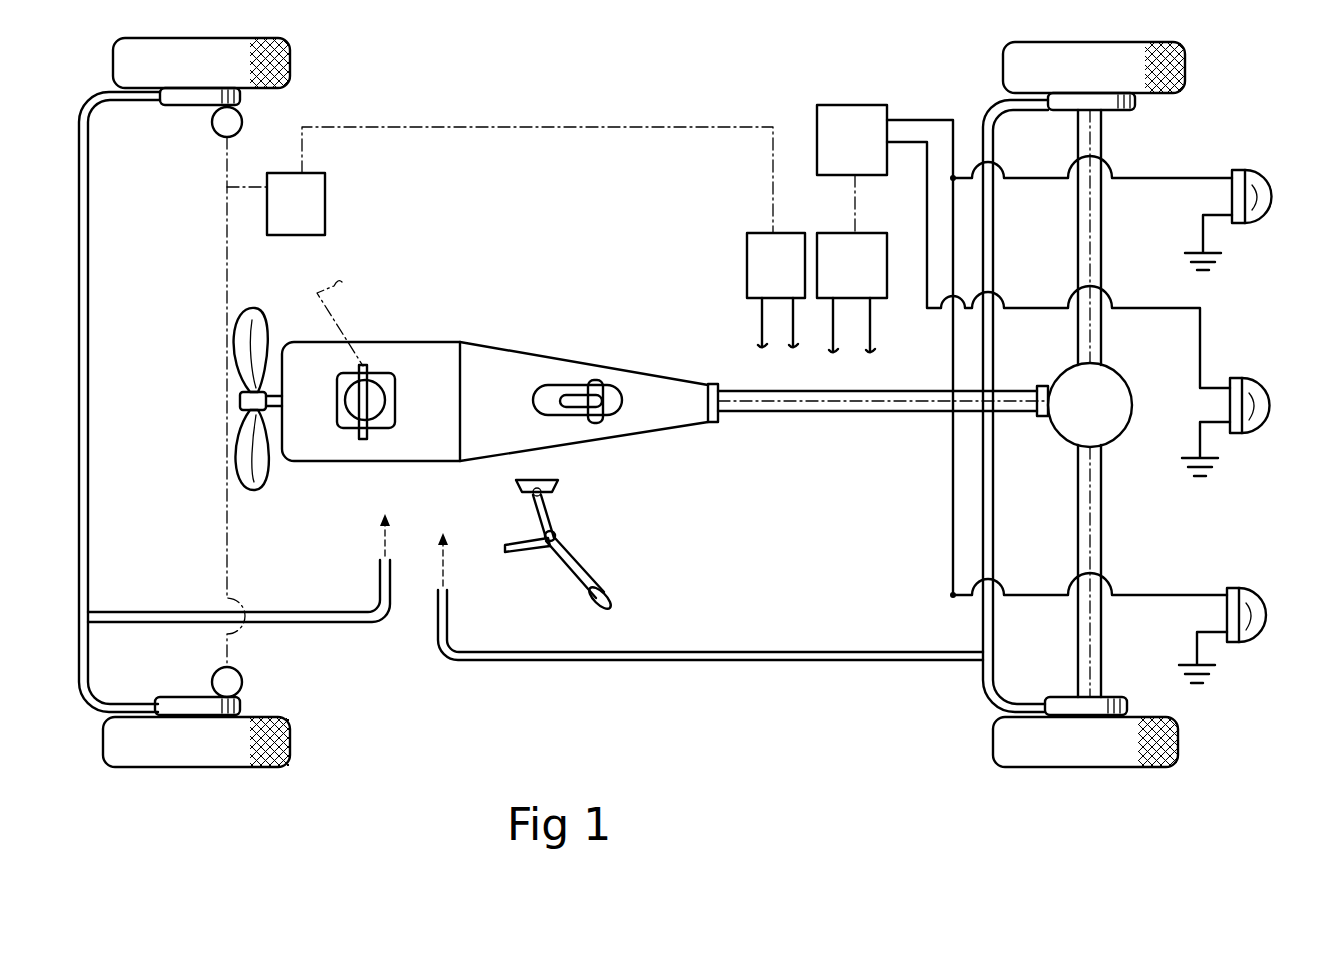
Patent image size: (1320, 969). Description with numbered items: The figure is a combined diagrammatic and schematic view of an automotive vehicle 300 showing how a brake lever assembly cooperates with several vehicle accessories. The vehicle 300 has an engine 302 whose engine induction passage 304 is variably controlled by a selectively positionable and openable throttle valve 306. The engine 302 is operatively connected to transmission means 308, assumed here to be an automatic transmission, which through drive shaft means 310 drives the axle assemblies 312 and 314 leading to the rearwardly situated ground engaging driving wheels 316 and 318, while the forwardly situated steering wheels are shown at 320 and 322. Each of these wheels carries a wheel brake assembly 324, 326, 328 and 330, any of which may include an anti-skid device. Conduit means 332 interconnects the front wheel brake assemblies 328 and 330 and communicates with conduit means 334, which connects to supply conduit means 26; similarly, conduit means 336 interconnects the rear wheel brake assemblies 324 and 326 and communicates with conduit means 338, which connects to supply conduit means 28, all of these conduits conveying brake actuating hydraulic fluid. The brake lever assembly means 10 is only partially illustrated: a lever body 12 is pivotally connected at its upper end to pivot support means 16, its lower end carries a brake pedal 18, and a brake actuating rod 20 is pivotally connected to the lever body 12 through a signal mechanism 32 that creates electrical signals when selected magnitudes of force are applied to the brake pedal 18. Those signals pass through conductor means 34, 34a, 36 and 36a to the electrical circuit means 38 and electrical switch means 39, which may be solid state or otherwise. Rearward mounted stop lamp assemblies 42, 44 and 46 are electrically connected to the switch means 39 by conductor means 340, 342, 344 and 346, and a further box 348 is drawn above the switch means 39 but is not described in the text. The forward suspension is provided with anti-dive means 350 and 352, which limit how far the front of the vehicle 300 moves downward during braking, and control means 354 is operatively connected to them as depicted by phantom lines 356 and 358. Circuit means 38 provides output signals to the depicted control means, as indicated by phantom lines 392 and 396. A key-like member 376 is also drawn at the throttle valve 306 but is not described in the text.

The brake lever assembly means 10 is at (583, 517).
The lever body 12 is at (575, 568).
The pivot support means 16 is at (555, 485).
The brake pedal 18 is at (605, 598).
The brake actuating rod 20 is at (518, 552).
The supply conduit means 26 is at (397, 547).
The supply conduit means 28 is at (450, 548).
The signal mechanism 32 is at (540, 520).
The conductor means 34 is at (762, 320).
The conductor means 34a is at (833, 350).
The conductor means 36 is at (792, 337).
The conductor means 36a is at (870, 350).
The circuit means 38 is at (747, 261).
The electrical switch means 39 is at (887, 260).
The stop lamp assembly 42 is at (1250, 592).
The stop lamp assembly 44 is at (1262, 213).
The stop lamp assembly 46 is at (1252, 385).
The automotive vehicle 300 is at (802, 748).
The engine 302 is at (365, 462).
The engine induction passage 304 is at (353, 404).
The throttle valve 306 is at (395, 395).
The transmission means 308 is at (520, 436).
The drive shaft means 310 is at (805, 412).
The axle assembly 312 is at (1101, 336).
The axle assembly 314 is at (1101, 536).
The driving wheel 316 is at (1185, 70).
The driving wheel 318 is at (1178, 748).
The steering wheel 320 is at (290, 55).
The steering wheel 322 is at (290, 745).
The wheel brake assembly 324 is at (1135, 100).
The wheel brake assembly 326 is at (1127, 705).
The wheel brake assembly 328 is at (240, 97).
The wheel brake assembly 330 is at (242, 705).
The conduit means 332 is at (79, 380).
The conduit means 334 is at (268, 612).
The conduit means 336 is at (983, 630).
The conduit means 338 is at (712, 661).
The conductor means 340 is at (1150, 595).
The conductor means 342 is at (1150, 180).
The conductor means 344 is at (952, 455).
The conductor means 346 is at (1145, 308).
The battery 348 is at (838, 108).
The anti-dive means 350 is at (243, 122).
The anti-dive means 352 is at (242, 675).
The control means 354 is at (325, 197).
The phantom line 356 is at (227, 190).
The phantom line 358 is at (225, 350).
The ignition key 376 is at (367, 366).
The phantom line 392 is at (693, 125).
The phantom line 396 is at (855, 183).